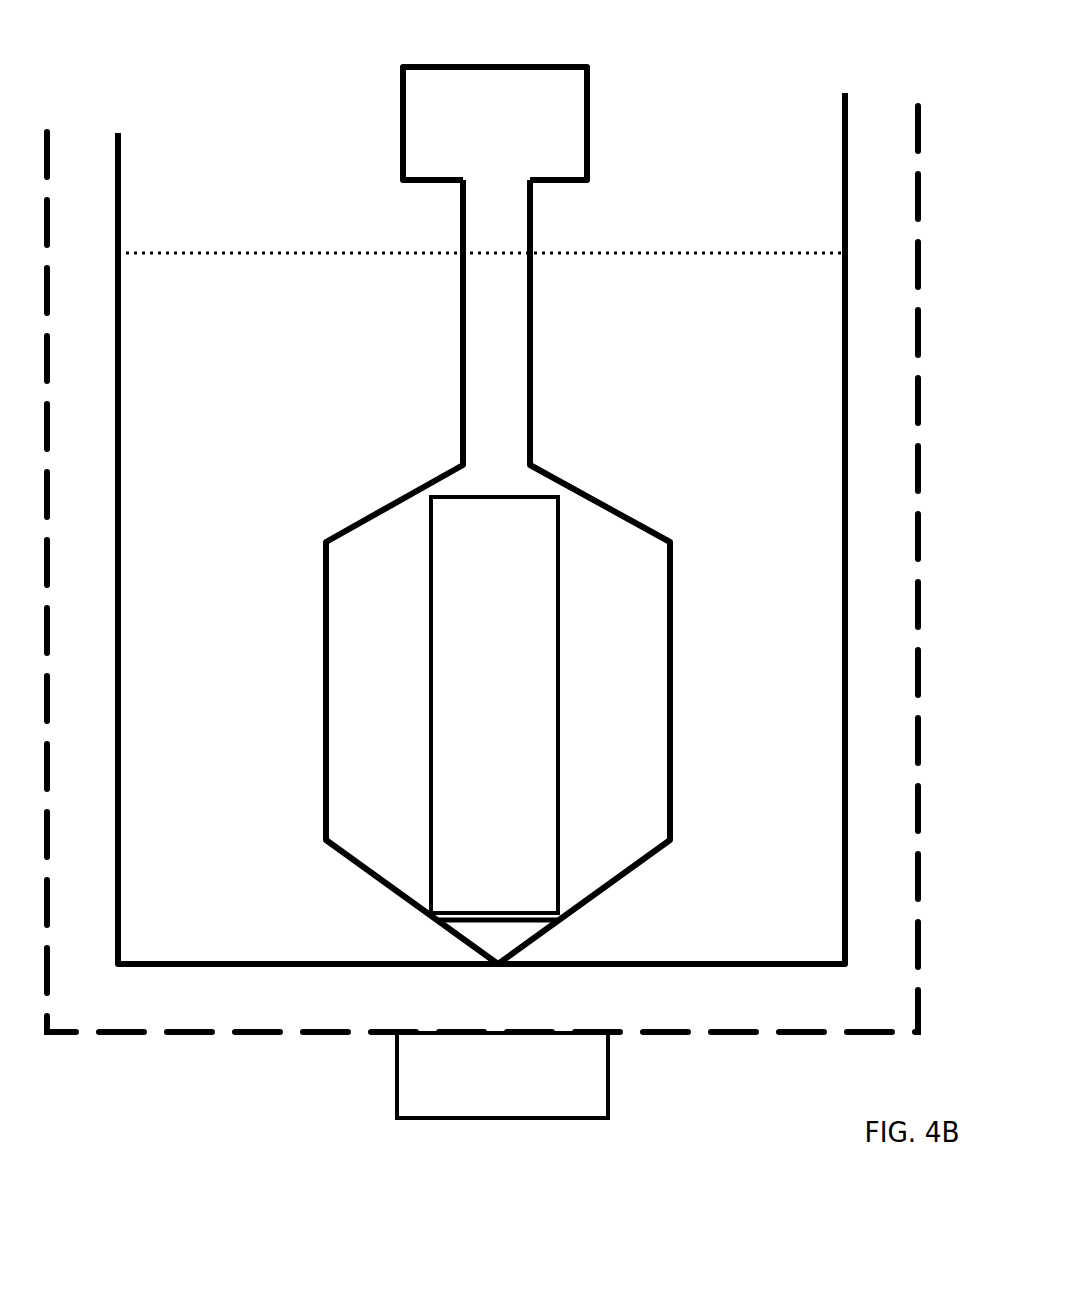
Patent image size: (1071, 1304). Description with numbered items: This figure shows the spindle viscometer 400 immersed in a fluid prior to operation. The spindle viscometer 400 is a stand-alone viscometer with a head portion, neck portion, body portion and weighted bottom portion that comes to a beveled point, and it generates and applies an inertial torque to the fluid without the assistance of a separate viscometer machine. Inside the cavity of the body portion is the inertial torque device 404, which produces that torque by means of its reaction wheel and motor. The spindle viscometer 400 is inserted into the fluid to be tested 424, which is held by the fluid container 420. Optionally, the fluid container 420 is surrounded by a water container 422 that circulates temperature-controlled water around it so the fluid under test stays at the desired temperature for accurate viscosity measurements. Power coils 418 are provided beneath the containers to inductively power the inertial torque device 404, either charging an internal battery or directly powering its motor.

The spindle viscometer 400 is at (498, 485).
The inertial torque device 404 is at (494, 705).
The power coils 418 is at (502, 1075).
The fluid container 420 is at (481, 528).
The water container 422 is at (482, 562).
The fluid to be tested 424 is at (481, 235).